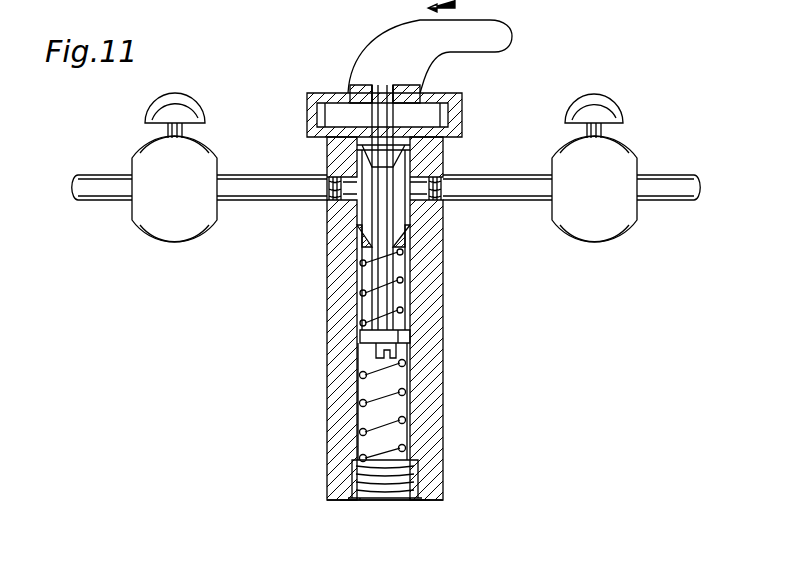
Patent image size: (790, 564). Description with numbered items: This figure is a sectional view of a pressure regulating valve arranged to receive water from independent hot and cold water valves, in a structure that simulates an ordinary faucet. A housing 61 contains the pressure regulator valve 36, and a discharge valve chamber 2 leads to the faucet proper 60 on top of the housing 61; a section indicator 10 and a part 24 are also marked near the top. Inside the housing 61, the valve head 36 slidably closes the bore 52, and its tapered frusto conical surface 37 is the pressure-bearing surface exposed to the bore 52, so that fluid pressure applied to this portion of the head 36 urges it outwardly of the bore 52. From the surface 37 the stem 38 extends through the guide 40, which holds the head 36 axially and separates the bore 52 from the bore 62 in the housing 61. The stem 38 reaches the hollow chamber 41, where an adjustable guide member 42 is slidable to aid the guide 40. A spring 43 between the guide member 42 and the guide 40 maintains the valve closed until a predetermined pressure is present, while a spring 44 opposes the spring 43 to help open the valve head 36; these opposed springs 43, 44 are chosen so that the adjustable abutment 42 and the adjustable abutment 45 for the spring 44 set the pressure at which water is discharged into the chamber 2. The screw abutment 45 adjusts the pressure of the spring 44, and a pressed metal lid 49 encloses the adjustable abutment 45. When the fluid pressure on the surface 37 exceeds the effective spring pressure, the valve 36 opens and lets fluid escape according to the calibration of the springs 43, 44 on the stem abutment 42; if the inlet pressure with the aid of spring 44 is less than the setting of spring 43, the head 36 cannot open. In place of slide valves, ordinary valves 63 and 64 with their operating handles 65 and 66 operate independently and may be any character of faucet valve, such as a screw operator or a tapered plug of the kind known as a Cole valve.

The discharge valve chamber 2 is at (334, 108).
The section indicator 10 is at (425, 12).
The packing nut 24 is at (432, 51).
The head of pressure regulating valve 36 is at (388, 150).
The frusto conical valve surface 37 is at (388, 152).
The stem 38 is at (387, 213).
The guide 40 is at (393, 248).
The hollow chamber 41 is at (378, 358).
The adjustable guide member 42 is at (400, 336).
The spring 43 is at (405, 290).
The spring 44 is at (392, 392).
The adjustable abutment 45 is at (410, 477).
The pressed metal lid 49 is at (373, 502).
The bore 52 is at (372, 216).
The faucet proper 60 is at (515, 36).
The housing 61 is at (327, 328).
The bore 62 is at (373, 441).
The valve 63 is at (185, 225).
The valve 64 is at (603, 222).
The operating handle 65 is at (183, 113).
The operating handle 66 is at (608, 104).